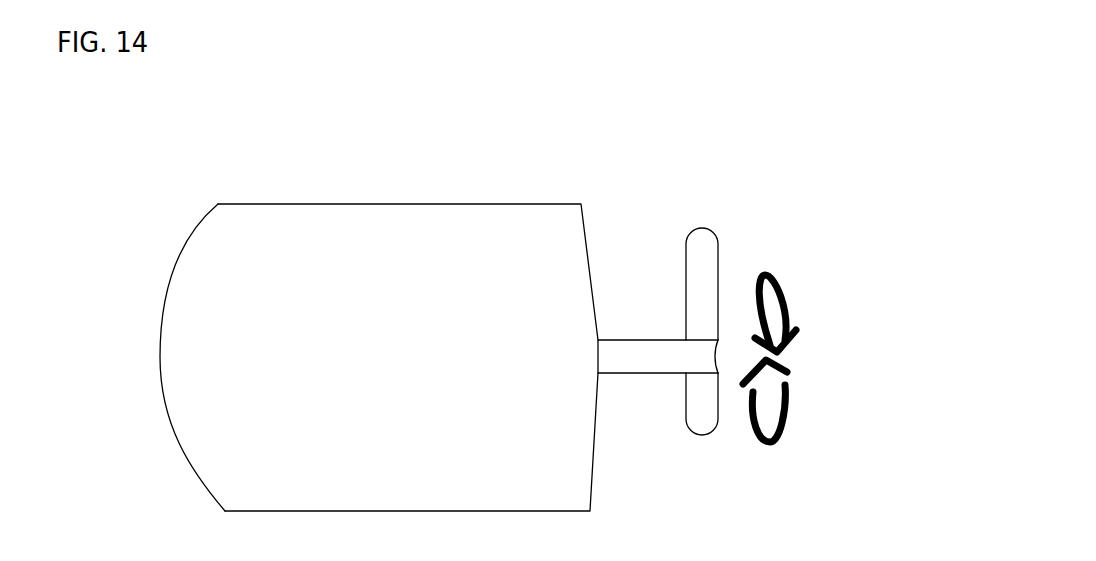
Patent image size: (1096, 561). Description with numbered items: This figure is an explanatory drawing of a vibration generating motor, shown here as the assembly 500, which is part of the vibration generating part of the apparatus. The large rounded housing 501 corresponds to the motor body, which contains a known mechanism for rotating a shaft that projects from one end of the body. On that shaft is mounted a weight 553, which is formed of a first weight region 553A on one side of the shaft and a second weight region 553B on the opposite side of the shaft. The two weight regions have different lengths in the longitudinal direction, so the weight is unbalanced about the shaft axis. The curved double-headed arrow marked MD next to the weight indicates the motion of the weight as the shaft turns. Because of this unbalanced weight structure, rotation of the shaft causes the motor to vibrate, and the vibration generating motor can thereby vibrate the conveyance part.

The impeller assembly 500 is at (627, 170).
The impeller body 501 is at (343, 252).
The weight 553 is at (720, 209).
The first weight region 553A is at (697, 271).
The second weight region 553B is at (701, 408).
The movement direction MD is at (792, 358).